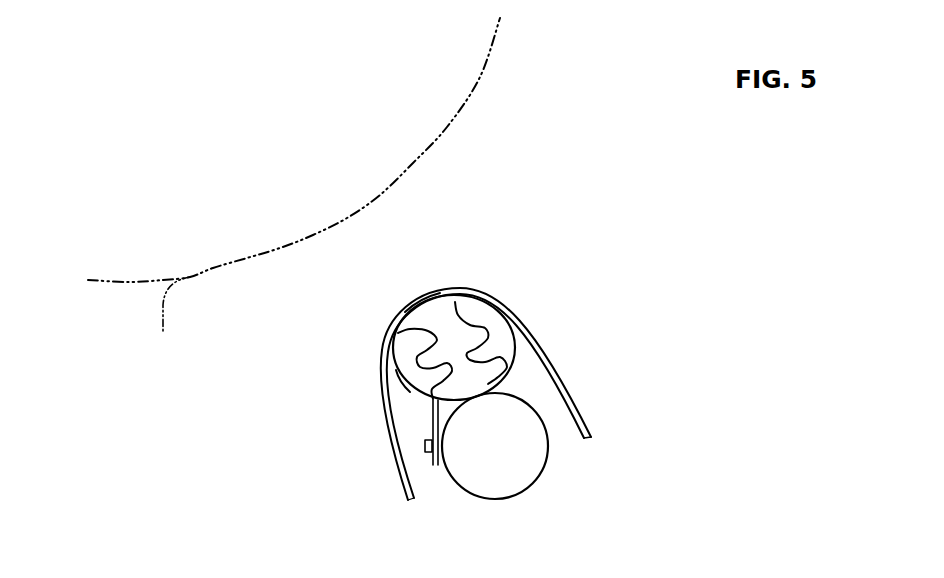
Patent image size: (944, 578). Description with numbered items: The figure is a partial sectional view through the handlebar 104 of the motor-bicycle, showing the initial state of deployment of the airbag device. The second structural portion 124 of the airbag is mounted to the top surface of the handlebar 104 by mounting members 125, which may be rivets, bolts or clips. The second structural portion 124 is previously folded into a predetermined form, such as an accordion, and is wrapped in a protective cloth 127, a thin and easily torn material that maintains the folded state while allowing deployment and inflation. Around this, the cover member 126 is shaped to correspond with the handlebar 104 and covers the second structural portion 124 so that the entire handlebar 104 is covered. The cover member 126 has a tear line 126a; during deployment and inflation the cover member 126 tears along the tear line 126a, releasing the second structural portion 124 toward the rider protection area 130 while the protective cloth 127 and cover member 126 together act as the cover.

The handlebar 104 is at (545, 440).
The second structural portion 124 is at (498, 313).
The mounting members 125 is at (427, 466).
The cover member 126 is at (364, 323).
The tear line 126a is at (430, 293).
The protective cloth 127 is at (398, 383).
The rider protection area 130 is at (294, 199).